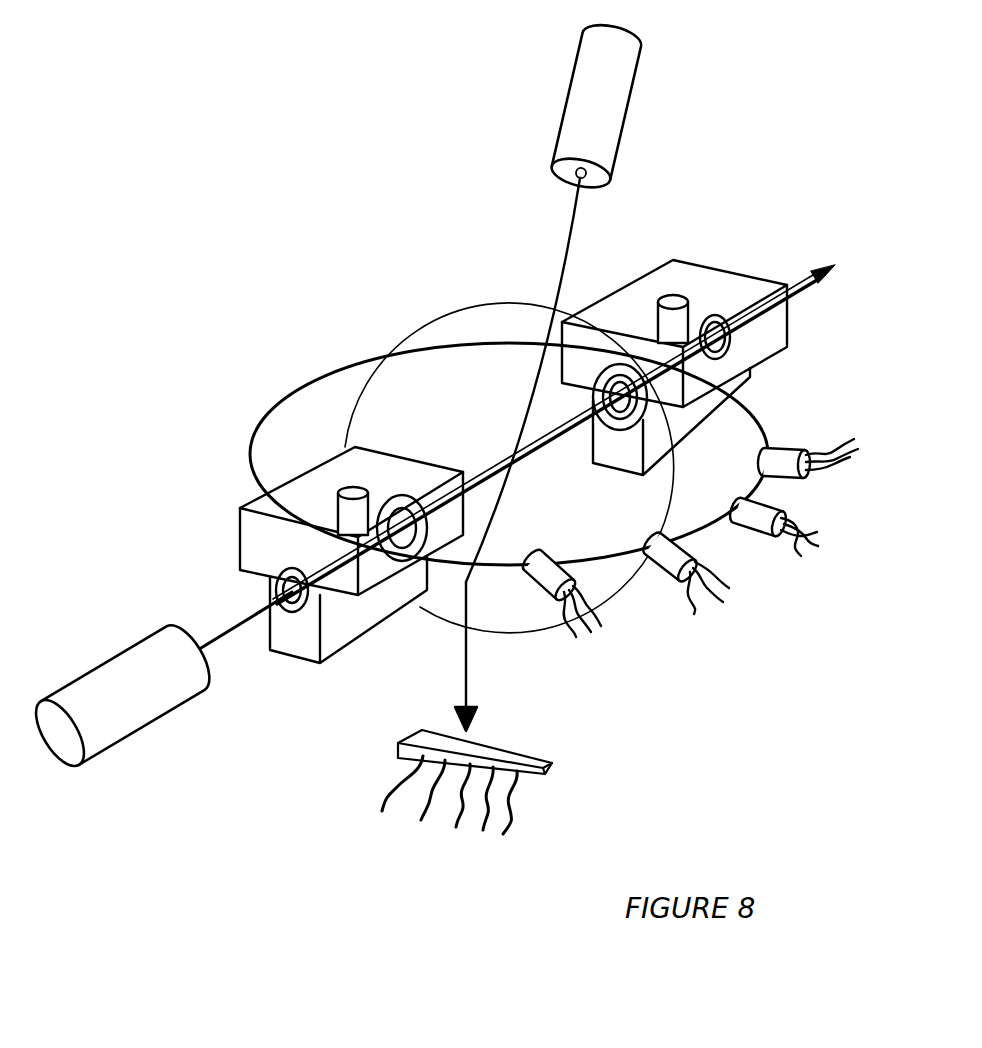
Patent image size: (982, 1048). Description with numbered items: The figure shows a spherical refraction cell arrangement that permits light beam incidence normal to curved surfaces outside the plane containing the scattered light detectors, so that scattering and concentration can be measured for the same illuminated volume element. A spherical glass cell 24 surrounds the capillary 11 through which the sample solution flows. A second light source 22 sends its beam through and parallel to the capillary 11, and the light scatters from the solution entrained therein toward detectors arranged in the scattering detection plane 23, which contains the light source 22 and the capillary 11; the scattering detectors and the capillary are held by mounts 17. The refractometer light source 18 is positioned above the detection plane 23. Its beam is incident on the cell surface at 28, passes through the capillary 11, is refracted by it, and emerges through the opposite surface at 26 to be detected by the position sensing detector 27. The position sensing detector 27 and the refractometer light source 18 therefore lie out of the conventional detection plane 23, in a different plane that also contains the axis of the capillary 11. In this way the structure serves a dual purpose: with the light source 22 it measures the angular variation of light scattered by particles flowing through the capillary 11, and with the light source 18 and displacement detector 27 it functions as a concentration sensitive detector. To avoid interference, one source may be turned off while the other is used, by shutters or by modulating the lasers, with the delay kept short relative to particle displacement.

The capillary 11 is at (509, 454).
The fiber mounts 17 is at (513, 461).
The refractometer light source 18 is at (596, 106).
The second light source 22 is at (159, 682).
The scattering detection plane 23 is at (768, 492).
The spherical glass cell 24 is at (418, 323).
The emergence surface 26 is at (470, 587).
The position sensing detector 27 is at (555, 764).
The incidence surface 28 is at (542, 326).